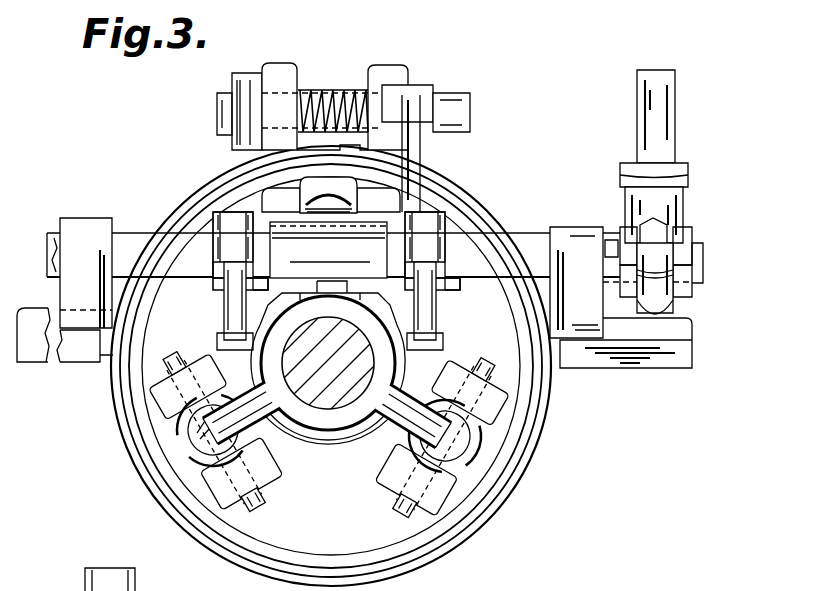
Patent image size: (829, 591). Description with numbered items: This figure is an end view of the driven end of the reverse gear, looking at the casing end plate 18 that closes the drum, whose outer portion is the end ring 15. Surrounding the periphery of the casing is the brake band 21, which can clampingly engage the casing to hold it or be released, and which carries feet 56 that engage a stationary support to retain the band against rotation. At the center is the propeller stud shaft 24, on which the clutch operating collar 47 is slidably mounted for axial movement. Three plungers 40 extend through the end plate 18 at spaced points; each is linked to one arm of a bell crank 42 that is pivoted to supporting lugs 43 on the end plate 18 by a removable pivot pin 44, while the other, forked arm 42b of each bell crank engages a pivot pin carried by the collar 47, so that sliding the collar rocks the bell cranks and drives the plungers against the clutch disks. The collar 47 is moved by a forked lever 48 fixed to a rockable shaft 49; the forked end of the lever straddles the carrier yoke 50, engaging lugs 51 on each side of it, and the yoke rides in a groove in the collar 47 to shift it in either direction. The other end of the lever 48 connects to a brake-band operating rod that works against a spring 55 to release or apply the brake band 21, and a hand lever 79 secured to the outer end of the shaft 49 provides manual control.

The end ring 15 is at (225, 525).
The end plate 18 is at (342, 531).
The brake band 21 is at (480, 232).
The stud shaft 24 is at (334, 404).
The plunger 40 is at (205, 455).
The bell crank 42 is at (200, 434).
The arm of bell crank 42b is at (250, 430).
The supporting lug 43 is at (390, 215).
The pivot pin 44 is at (252, 502).
The clutch operating collar 47 is at (362, 432).
The forked lever 48 is at (420, 160).
The shaft 49 is at (527, 252).
The carrier yoke 50 is at (345, 445).
The lug 51 is at (220, 340).
The spring 55 is at (322, 97).
The foot 56 is at (686, 333).
The hand lever 79 is at (660, 112).